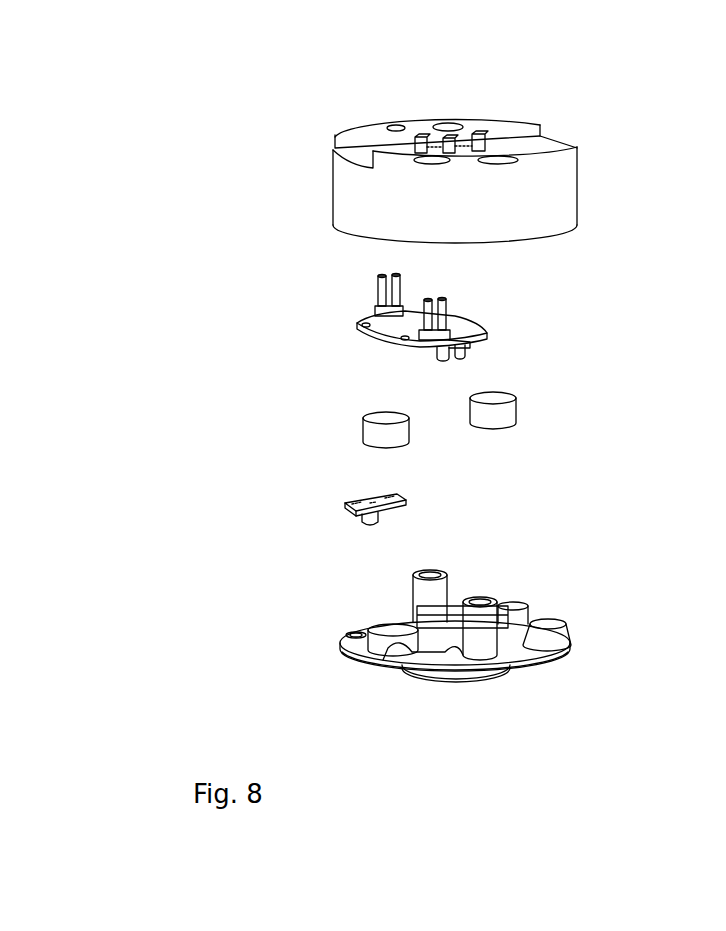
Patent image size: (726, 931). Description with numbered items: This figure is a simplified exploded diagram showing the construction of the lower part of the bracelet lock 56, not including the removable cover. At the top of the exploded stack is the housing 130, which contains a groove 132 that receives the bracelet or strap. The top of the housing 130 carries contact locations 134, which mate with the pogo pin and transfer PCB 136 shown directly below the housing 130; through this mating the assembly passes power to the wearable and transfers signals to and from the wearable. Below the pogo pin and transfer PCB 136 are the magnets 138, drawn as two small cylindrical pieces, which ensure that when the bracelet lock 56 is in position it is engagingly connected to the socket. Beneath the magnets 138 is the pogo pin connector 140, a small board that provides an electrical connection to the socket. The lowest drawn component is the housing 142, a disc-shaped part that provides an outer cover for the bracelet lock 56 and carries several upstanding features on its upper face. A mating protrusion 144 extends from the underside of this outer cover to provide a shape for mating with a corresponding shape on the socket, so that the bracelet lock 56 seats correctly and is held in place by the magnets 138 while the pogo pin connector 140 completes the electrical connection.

The bracelet lock 56 is at (250, 220).
The housing 130 is at (565, 183).
The groove 132 is at (353, 157).
The contact locations 134 is at (393, 125).
The pogo pin and transfer PCB 136 is at (457, 326).
The magnets 138 is at (503, 415).
The pogo pin connector 140 is at (345, 504).
The housing 142 is at (523, 650).
The mating protrusion 144 is at (470, 678).